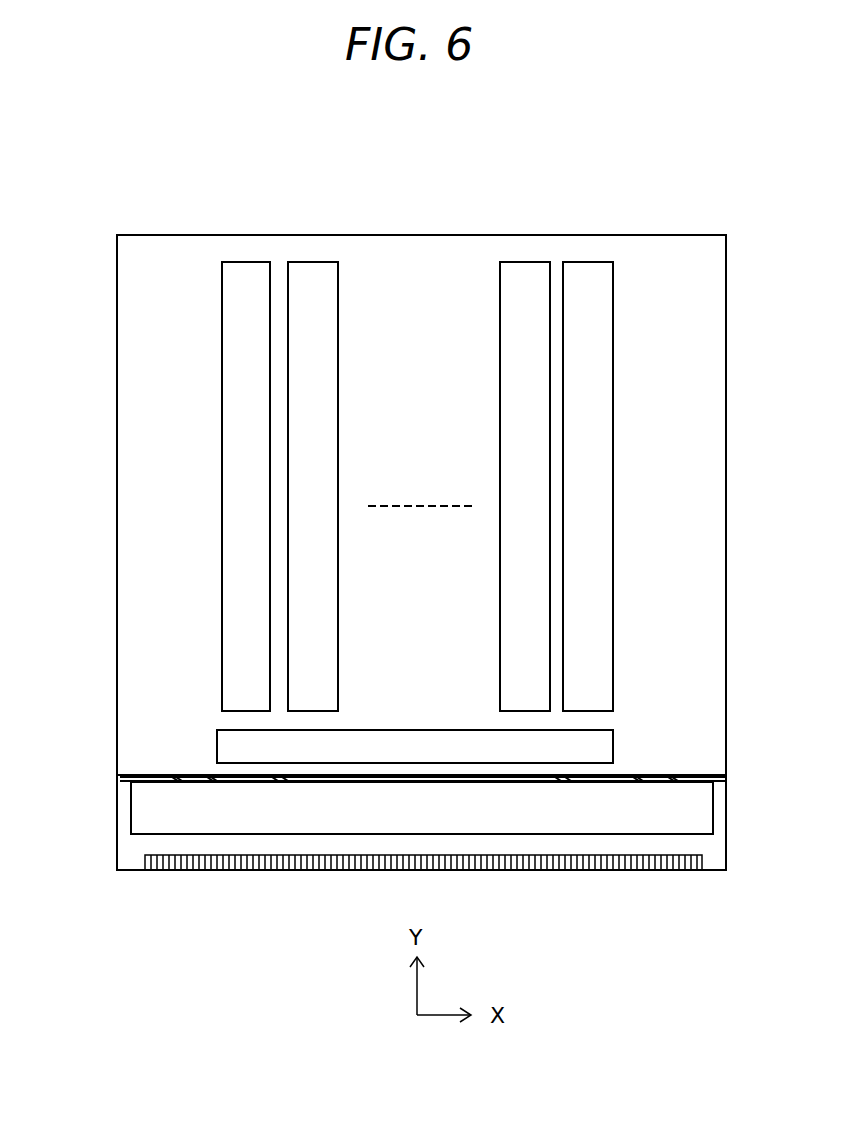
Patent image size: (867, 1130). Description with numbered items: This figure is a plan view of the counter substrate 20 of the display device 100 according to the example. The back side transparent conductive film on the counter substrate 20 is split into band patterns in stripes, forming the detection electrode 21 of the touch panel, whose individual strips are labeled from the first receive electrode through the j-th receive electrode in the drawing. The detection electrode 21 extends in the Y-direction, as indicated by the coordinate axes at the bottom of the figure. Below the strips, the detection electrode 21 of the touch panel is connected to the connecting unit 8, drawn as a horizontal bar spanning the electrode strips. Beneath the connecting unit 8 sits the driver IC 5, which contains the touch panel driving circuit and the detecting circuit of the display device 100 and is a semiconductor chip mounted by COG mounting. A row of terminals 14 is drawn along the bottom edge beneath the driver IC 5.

The display device 100 is at (442, 142).
The counter substrate 20 is at (240, 248).
The detection electrode 21 is at (233, 305).
The connecting unit 8 is at (603, 745).
The driver IC 5 is at (600, 805).
The terminal portion 14 is at (238, 870).